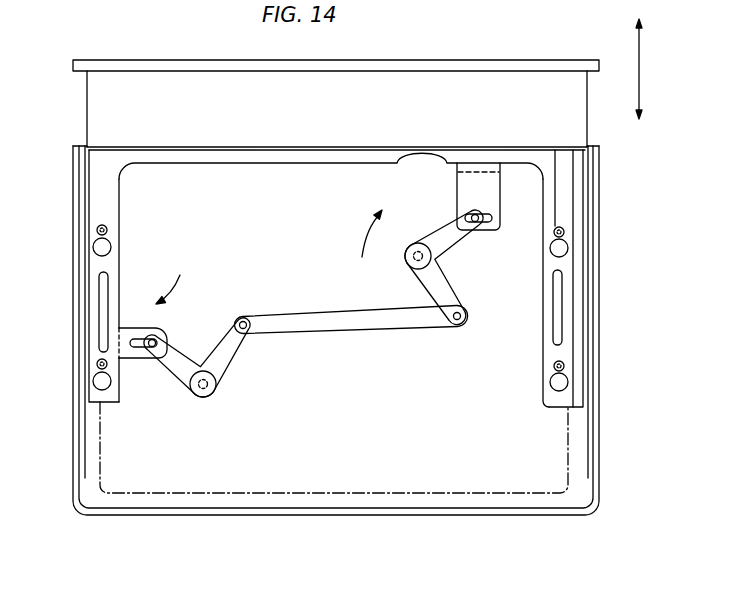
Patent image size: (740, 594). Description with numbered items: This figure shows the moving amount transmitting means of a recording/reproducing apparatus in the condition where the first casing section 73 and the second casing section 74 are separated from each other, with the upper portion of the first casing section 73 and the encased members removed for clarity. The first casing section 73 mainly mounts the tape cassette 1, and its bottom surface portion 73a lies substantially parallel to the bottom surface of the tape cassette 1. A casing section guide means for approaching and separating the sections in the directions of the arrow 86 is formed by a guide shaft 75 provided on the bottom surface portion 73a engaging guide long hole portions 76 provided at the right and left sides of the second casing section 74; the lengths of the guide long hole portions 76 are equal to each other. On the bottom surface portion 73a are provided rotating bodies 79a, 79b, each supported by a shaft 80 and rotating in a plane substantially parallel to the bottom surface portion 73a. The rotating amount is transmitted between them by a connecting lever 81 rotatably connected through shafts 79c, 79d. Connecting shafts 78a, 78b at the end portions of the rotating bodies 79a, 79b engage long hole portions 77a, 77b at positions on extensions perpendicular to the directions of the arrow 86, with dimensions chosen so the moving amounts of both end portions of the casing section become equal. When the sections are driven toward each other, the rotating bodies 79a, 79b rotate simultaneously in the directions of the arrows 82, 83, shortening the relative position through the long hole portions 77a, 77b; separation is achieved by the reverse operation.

The tape cassette 1 is at (534, 497).
The first casing section 73 is at (601, 186).
The bottom surface portion 73a is at (583, 469).
The second casing section 74 is at (197, 80).
The guide shaft 75 is at (97, 231).
The guide long hole portions 76 is at (103, 182).
The long hole portion 77a is at (137, 358).
The long hole portion 77b is at (493, 214).
The connecting shaft 78a is at (167, 338).
The connecting shaft 78b is at (470, 216).
The rotating body 79a is at (180, 373).
The rotating body 79b is at (447, 245).
The shaft 79c is at (246, 330).
The shaft 79d is at (466, 332).
The shaft 80 is at (207, 398).
The connecting lever 81 is at (373, 328).
The arrow 82 is at (368, 232).
The arrow 83 is at (174, 276).
The arrow 86 is at (642, 74).